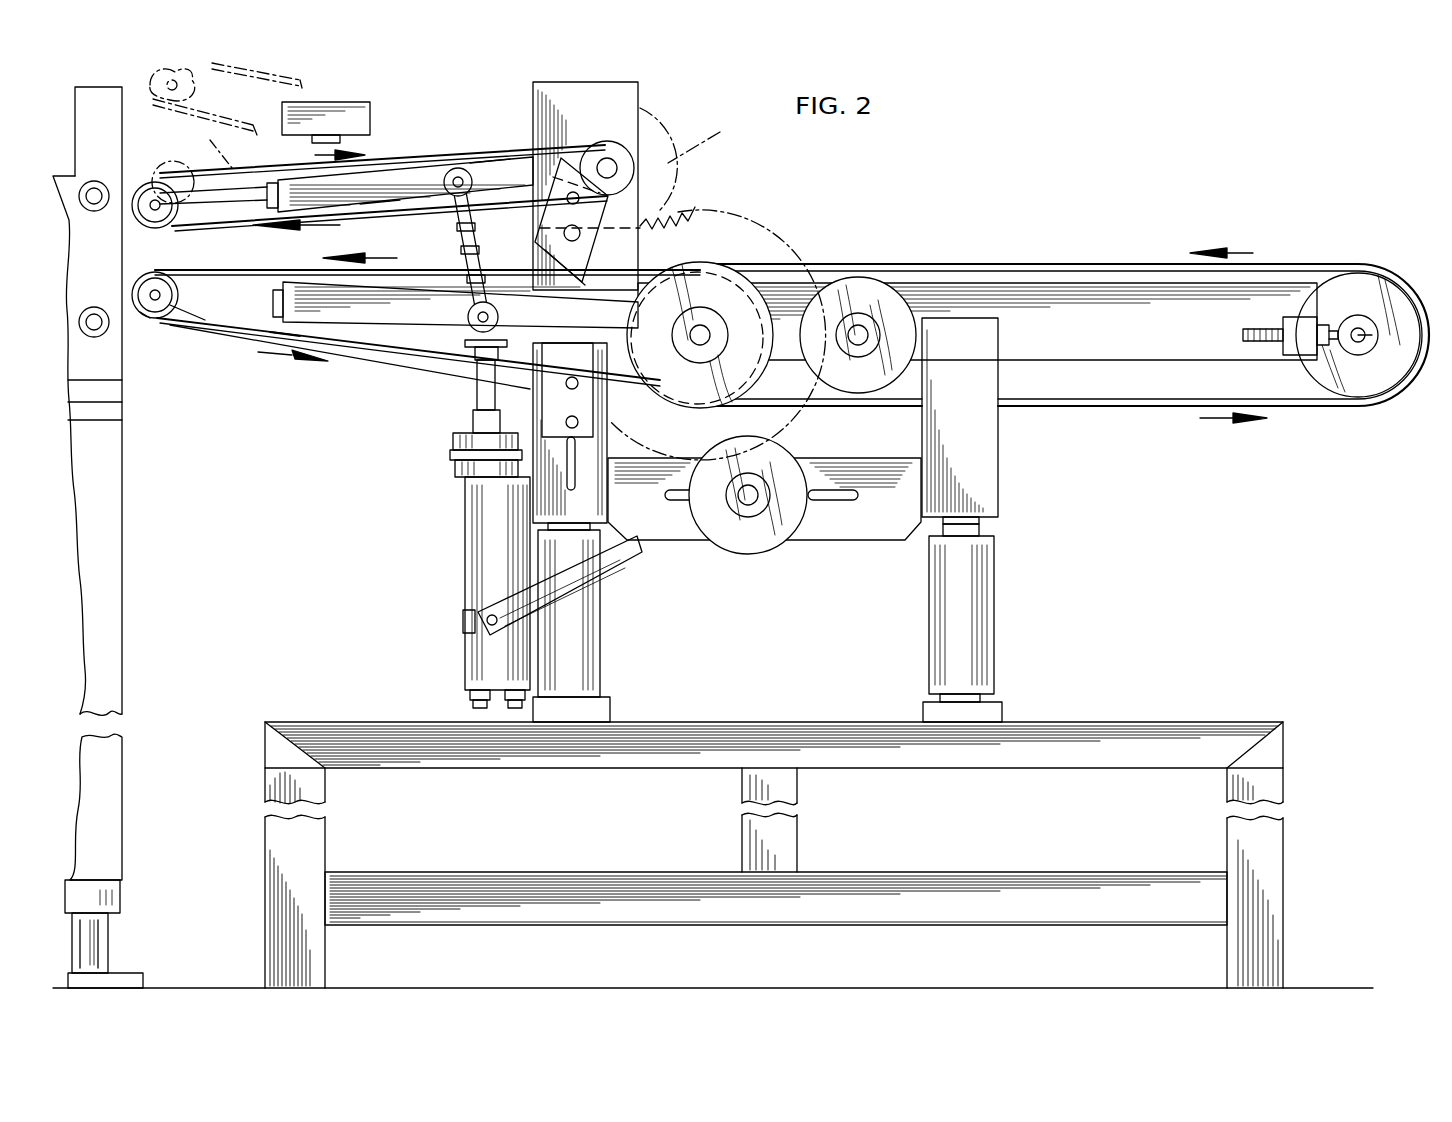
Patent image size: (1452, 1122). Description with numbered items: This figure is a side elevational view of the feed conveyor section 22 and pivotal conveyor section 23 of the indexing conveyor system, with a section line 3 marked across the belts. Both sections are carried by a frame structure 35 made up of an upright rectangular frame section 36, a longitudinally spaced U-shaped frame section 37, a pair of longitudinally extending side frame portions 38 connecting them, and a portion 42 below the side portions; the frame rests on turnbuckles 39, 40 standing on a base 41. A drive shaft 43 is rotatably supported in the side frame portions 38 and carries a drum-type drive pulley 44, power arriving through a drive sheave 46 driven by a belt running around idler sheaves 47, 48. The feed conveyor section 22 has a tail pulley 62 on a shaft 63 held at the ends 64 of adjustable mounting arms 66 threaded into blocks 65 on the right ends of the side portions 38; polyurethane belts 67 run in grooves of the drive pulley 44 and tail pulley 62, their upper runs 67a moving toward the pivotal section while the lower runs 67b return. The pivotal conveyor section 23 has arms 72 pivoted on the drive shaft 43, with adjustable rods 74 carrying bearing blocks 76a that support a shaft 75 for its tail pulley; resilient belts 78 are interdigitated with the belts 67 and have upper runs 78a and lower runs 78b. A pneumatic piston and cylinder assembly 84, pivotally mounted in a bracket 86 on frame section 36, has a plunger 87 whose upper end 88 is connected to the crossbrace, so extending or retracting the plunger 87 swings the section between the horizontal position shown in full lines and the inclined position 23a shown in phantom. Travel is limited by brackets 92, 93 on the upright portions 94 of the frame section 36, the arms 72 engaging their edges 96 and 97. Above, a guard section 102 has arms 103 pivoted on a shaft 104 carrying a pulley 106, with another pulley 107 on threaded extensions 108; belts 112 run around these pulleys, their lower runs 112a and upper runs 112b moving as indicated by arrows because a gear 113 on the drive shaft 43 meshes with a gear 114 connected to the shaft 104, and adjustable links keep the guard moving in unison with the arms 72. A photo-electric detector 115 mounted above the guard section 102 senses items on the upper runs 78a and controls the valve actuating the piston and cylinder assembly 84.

The section line 3- 3 is at (158, 243).
The feed conveyor section 22 is at (1220, 238).
The pivotal conveyor section 23 is at (352, 356).
The upwardly inclined first position 23a is at (225, 140).
The frame structure 35 is at (1005, 507).
The rectangular frame section 36 is at (645, 198).
The U-shaped frame section 37 is at (1002, 445).
The side frame portions 38 is at (1060, 283).
The turnbuckle 39 is at (600, 610).
The turnbuckle 40 is at (985, 625).
The base 41 is at (1236, 720).
The frame portion 42 is at (835, 540).
The drive shaft 43 is at (697, 328).
The drive pulley 44 is at (734, 398).
The drive sheave 46 is at (710, 264).
The idler sheave 47 is at (862, 278).
The idler sheave 48 is at (730, 553).
The tail pulley 62 is at (1350, 395).
The shaft 63 is at (1375, 330).
The ends of mounting arms 64 is at (1358, 325).
The blocks 65 is at (1293, 325).
The adjustable mounting arms 66 is at (1245, 333).
The belts 67 is at (1118, 268).
The upper runs of belts 67a is at (992, 267).
The lower runs of belts 67b is at (1138, 408).
The arms 72 is at (370, 319).
The rods 74 is at (190, 320).
The shaft 75 is at (158, 290).
The bearing blocks 76a is at (152, 318).
The belts 78 is at (242, 266).
The upper runs of belts 78a is at (290, 268).
The lower runs of belts 78b is at (232, 338).
The piston and cylinder assembly 84 is at (462, 512).
The bracket 86 is at (470, 648).
The plunger 87 is at (478, 360).
The upper end of plunger 88 is at (462, 345).
The bracket 92 is at (636, 262).
The bracket 93 is at (600, 405).
The upright portions 94 is at (638, 255).
The lower edge of bracket 96 is at (540, 330).
The upper edge of bracket 97 is at (498, 365).
The guard section 102 is at (290, 70).
The arms 103 is at (368, 215).
The shaft 104 is at (607, 160).
The pulley 106 is at (655, 115).
The pulley 107 is at (152, 195).
The extensions 108 is at (240, 200).
The belts 112 is at (400, 152).
The lower runs of belts 112a is at (360, 218).
The upper runs of belts 112b is at (486, 153).
The gear 113 is at (778, 240).
The gear 114 is at (712, 130).
The photo-electric detector 115 is at (372, 110).